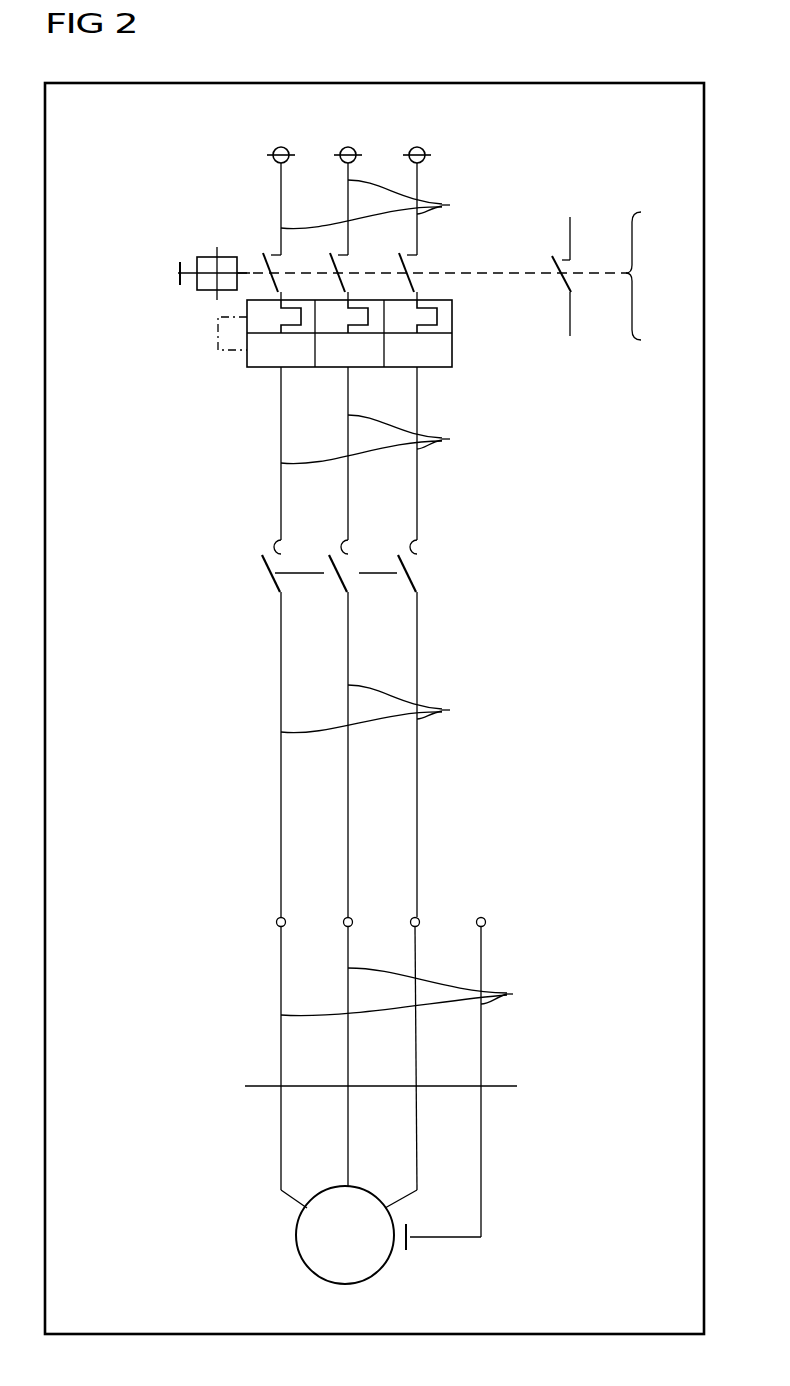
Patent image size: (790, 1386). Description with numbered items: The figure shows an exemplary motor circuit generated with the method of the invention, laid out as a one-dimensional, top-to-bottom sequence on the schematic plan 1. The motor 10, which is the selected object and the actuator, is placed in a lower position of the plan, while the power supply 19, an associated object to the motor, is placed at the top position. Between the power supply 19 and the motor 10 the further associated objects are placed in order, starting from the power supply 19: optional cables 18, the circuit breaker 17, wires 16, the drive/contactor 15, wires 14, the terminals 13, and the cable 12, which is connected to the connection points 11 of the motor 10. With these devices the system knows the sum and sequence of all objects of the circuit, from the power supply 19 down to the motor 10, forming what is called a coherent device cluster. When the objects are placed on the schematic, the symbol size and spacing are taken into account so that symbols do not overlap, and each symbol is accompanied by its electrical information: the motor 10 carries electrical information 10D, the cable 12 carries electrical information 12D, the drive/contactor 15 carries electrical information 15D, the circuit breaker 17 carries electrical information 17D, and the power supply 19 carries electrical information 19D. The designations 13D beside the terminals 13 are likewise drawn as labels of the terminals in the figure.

The plan 1 is at (600, 83).
The motor 10 is at (386, 1268).
The electrical information 10D is at (186, 1240).
The connection points 11 is at (526, 1169).
The cable 12 is at (413, 992).
The electrical information 12D is at (168, 966).
The terminals 13 is at (534, 924).
The terminal designations 13D is at (476, 910).
The wires 14 is at (383, 709).
The drive/contactor 15 is at (453, 569).
The electrical information 15D is at (217, 630).
The wires 16 is at (382, 439).
The circuit breaker 17 is at (428, 376).
The electrical information 17D is at (147, 337).
The cables 18 is at (382, 204).
The power supply 19 is at (456, 126).
The electrical information 19D is at (196, 126).